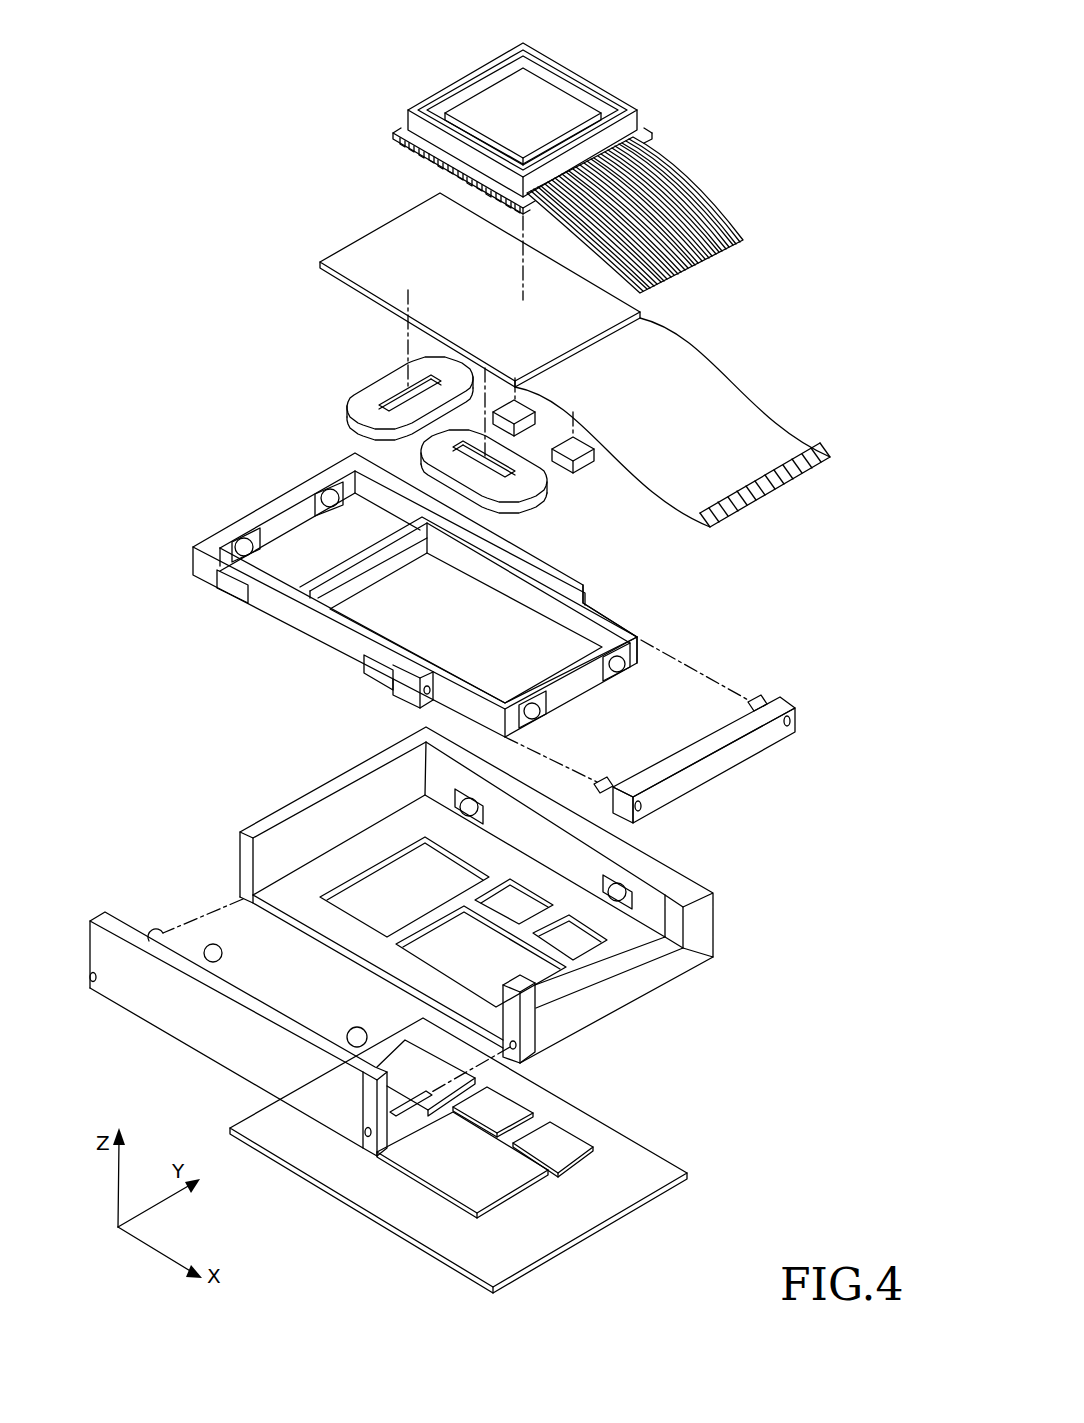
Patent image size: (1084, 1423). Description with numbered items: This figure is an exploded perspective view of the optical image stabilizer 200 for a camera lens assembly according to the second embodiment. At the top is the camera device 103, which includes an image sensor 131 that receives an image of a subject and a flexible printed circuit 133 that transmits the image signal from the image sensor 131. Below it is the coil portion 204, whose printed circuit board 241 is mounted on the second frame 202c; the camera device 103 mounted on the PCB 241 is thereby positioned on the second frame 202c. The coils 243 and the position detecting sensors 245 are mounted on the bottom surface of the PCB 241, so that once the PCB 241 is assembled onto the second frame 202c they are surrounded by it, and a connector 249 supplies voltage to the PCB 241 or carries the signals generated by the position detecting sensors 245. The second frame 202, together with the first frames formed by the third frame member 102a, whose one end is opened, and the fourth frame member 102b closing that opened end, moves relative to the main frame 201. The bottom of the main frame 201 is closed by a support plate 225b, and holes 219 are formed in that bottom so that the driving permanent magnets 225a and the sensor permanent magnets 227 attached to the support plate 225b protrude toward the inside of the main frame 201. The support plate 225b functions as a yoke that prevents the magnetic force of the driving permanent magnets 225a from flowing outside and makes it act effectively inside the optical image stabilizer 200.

The optical image stabilizer 200 is at (838, 136).
The camera device 103 is at (574, 152).
The image sensor 131 is at (530, 88).
The flexible printed circuit 133 is at (688, 183).
The coil portion 204 is at (549, 358).
The printed circuit board 241 is at (354, 257).
The coil 243 is at (362, 396).
The position detecting sensor 245 is at (588, 461).
The connector 249 is at (781, 488).
The upper frame 202 is at (464, 595).
The second frame 202c is at (650, 628).
The third frame member 102a is at (197, 563).
The fourth frame member 102b is at (718, 763).
The main frame 201 is at (515, 905).
The hole 219 is at (592, 942).
The driving permanent magnet 225a is at (400, 1070).
The support plate 225b is at (557, 1221).
The sensor permanent magnet 227 is at (506, 1110).